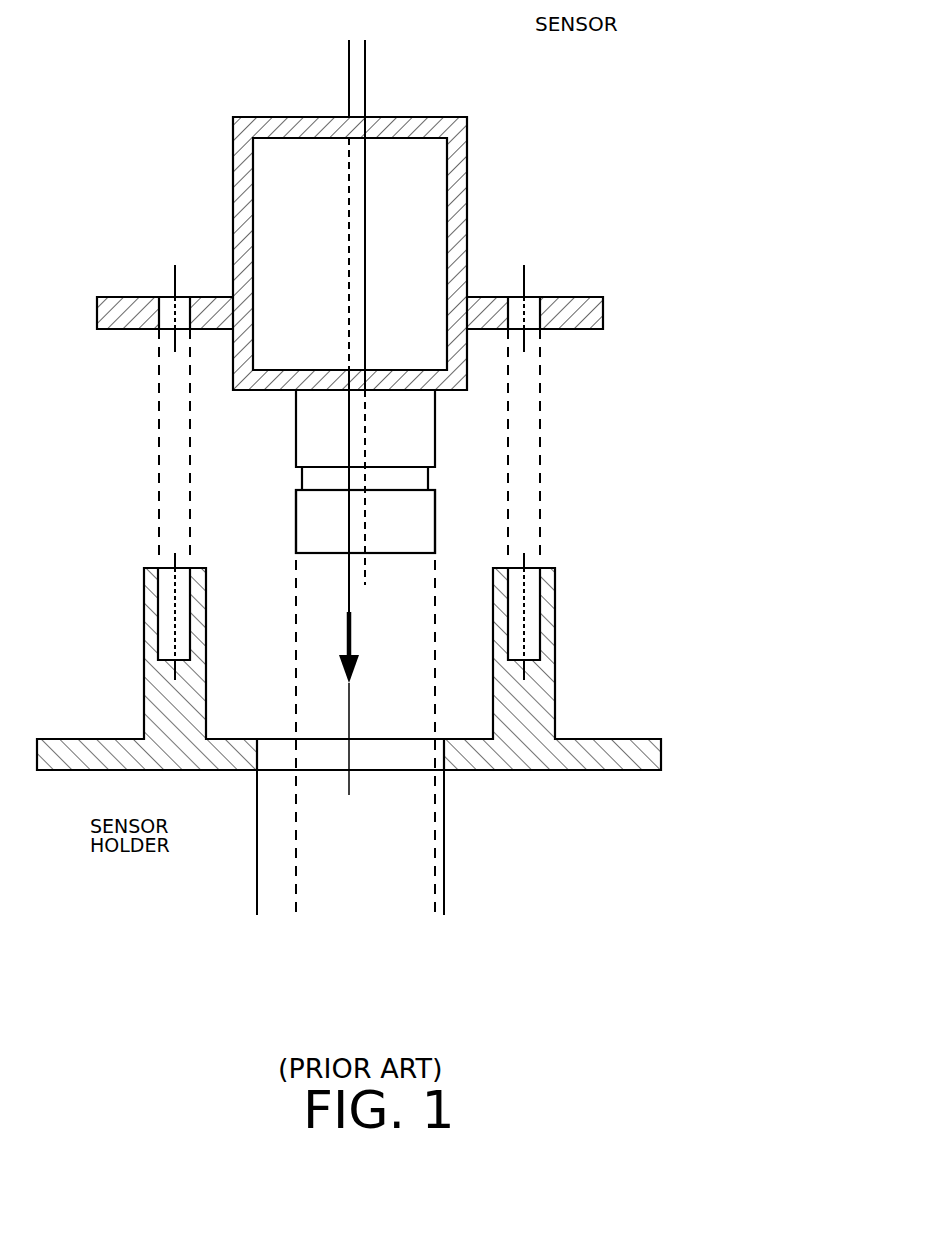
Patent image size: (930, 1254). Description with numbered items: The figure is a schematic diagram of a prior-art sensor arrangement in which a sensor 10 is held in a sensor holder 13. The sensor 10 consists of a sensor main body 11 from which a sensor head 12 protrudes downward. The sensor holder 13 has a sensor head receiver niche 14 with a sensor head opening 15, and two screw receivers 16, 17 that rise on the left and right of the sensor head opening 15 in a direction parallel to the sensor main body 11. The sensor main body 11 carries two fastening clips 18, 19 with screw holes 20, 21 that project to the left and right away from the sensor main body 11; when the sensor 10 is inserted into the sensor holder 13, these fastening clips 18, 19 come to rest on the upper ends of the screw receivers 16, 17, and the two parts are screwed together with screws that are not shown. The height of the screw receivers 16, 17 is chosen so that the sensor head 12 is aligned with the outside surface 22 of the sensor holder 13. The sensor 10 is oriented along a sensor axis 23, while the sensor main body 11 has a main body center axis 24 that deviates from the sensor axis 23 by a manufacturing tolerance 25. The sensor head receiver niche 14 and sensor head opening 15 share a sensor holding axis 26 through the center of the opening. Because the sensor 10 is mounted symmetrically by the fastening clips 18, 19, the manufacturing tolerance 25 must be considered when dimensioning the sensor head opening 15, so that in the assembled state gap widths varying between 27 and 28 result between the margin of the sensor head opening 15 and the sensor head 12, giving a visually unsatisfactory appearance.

The sensor 10 is at (547, 78).
The sensor main body 11 is at (455, 117).
The sensor head 12 is at (296, 453).
The sensor holder 13 is at (130, 770).
The sensor head receiver niche 14 is at (262, 588).
The sensor head opening 15 is at (394, 718).
The screw receiver 16 is at (155, 689).
The screw receiver 17 is at (549, 684).
The fastening clip 18 is at (118, 297).
The fastening clip 19 is at (585, 297).
The screw hole 20 is at (167, 297).
The screw hole 21 is at (520, 297).
The outside surface 22 is at (567, 778).
The sensor axis 23 is at (366, 524).
The main body center axis 24 is at (349, 261).
The manufacturing tolerance 25 is at (418, 52).
The sensor holding axis 26 is at (352, 757).
The gap width 27 is at (347, 900).
The gap width 28 is at (487, 900).